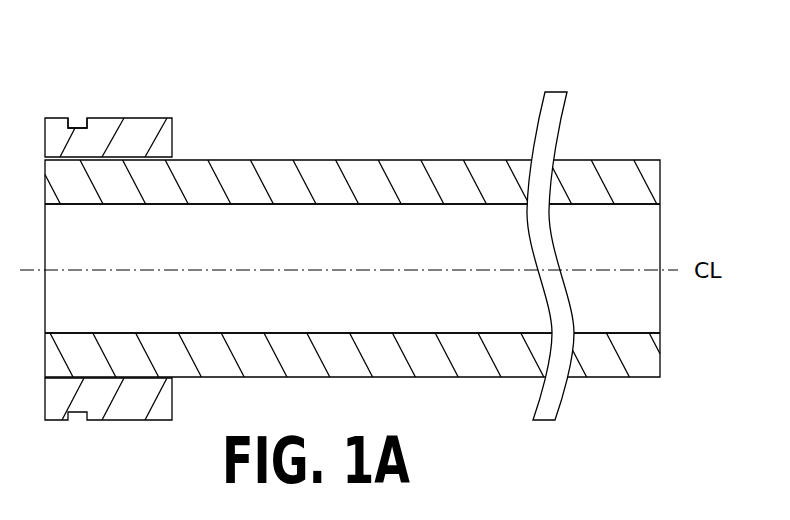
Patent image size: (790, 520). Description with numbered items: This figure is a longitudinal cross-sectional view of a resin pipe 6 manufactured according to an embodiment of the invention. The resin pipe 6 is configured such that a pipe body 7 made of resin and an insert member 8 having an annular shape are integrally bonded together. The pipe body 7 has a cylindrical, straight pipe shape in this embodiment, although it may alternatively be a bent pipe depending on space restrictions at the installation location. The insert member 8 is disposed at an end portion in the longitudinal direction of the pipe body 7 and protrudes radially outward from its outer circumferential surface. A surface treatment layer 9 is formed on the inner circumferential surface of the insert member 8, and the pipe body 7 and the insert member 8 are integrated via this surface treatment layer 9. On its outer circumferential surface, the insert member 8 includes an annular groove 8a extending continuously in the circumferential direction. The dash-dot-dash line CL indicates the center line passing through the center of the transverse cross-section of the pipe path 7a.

The resin pipe 6 is at (352, 229).
The pipe body 7 is at (320, 173).
The pipe path 7a is at (385, 205).
The insert member 8 is at (135, 231).
The annular groove 8a is at (78, 118).
The surface treatment layer 9 is at (156, 157).